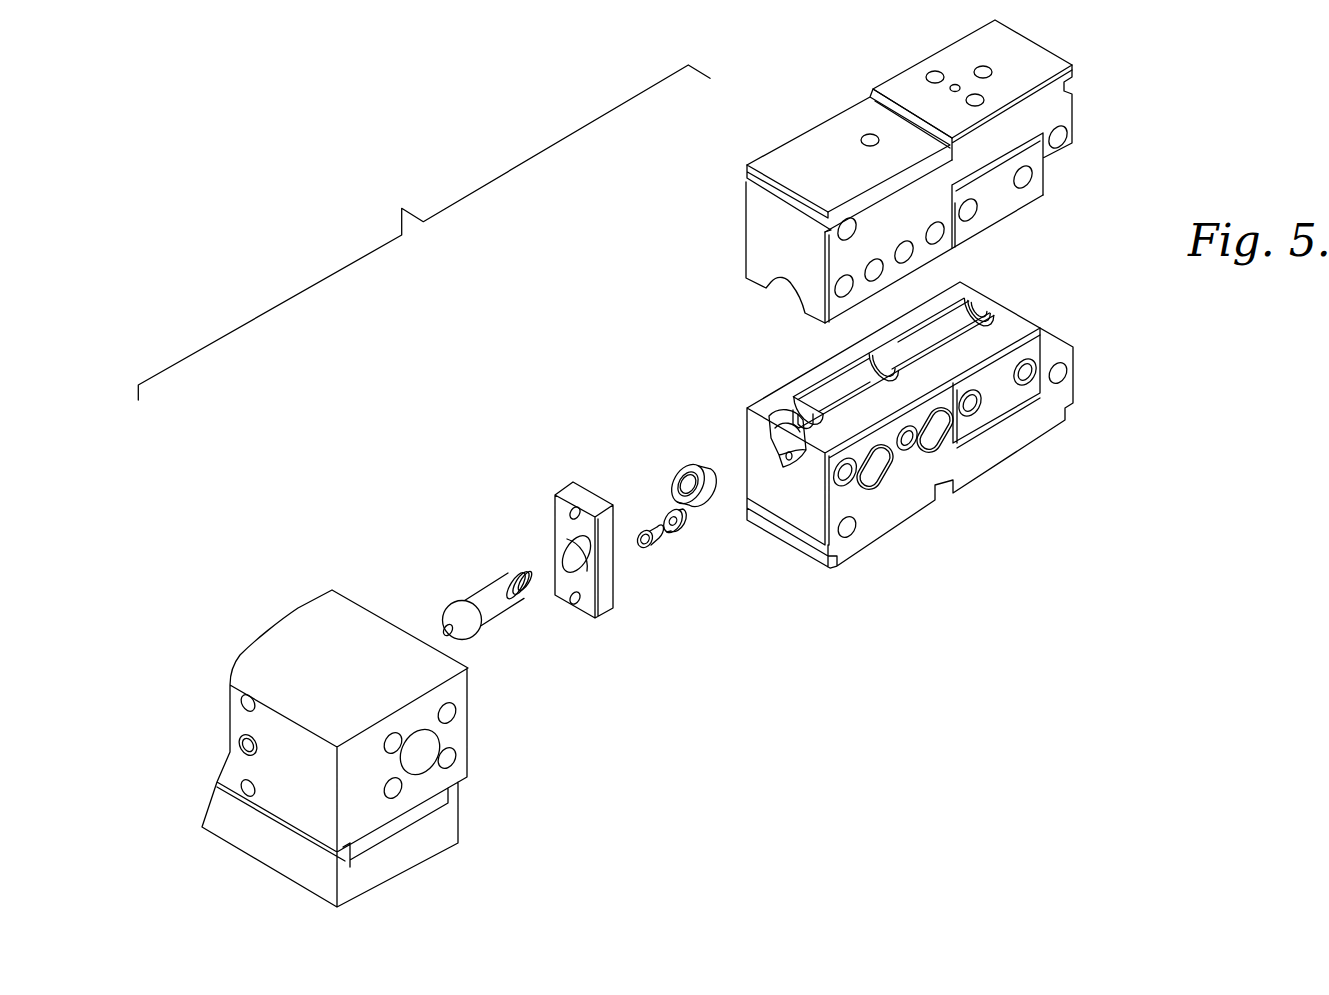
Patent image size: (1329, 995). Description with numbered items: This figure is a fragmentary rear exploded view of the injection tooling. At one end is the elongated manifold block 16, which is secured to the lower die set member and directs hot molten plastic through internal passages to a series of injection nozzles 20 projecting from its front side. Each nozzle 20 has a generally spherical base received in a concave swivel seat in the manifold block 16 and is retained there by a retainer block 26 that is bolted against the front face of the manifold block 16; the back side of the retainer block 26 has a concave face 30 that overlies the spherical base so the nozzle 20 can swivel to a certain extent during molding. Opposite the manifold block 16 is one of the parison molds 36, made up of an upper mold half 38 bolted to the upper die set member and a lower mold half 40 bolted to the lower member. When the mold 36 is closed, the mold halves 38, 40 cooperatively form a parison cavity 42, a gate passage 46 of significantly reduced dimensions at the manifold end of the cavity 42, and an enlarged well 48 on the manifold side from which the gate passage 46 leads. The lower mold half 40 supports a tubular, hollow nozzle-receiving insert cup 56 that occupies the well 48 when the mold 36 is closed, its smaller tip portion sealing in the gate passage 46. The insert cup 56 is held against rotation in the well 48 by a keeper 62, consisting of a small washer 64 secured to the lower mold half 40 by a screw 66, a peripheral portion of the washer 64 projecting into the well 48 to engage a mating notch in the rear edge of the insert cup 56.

The manifold block 16 is at (424, 680).
The injection nozzle 20 is at (485, 599).
The retainer block 26 is at (554, 550).
The concave face 30 is at (568, 554).
The parison mold 36 is at (909, 165).
The upper mold half 38 is at (954, 52).
The lower mold half 40 is at (884, 425).
The parison cavity 42 is at (844, 384).
The gate passage 46 is at (804, 417).
The well 48 is at (783, 431).
The insert cup 56 is at (688, 464).
The keeper 62 is at (676, 557).
The washer 64 is at (681, 531).
The screw 66 is at (641, 548).